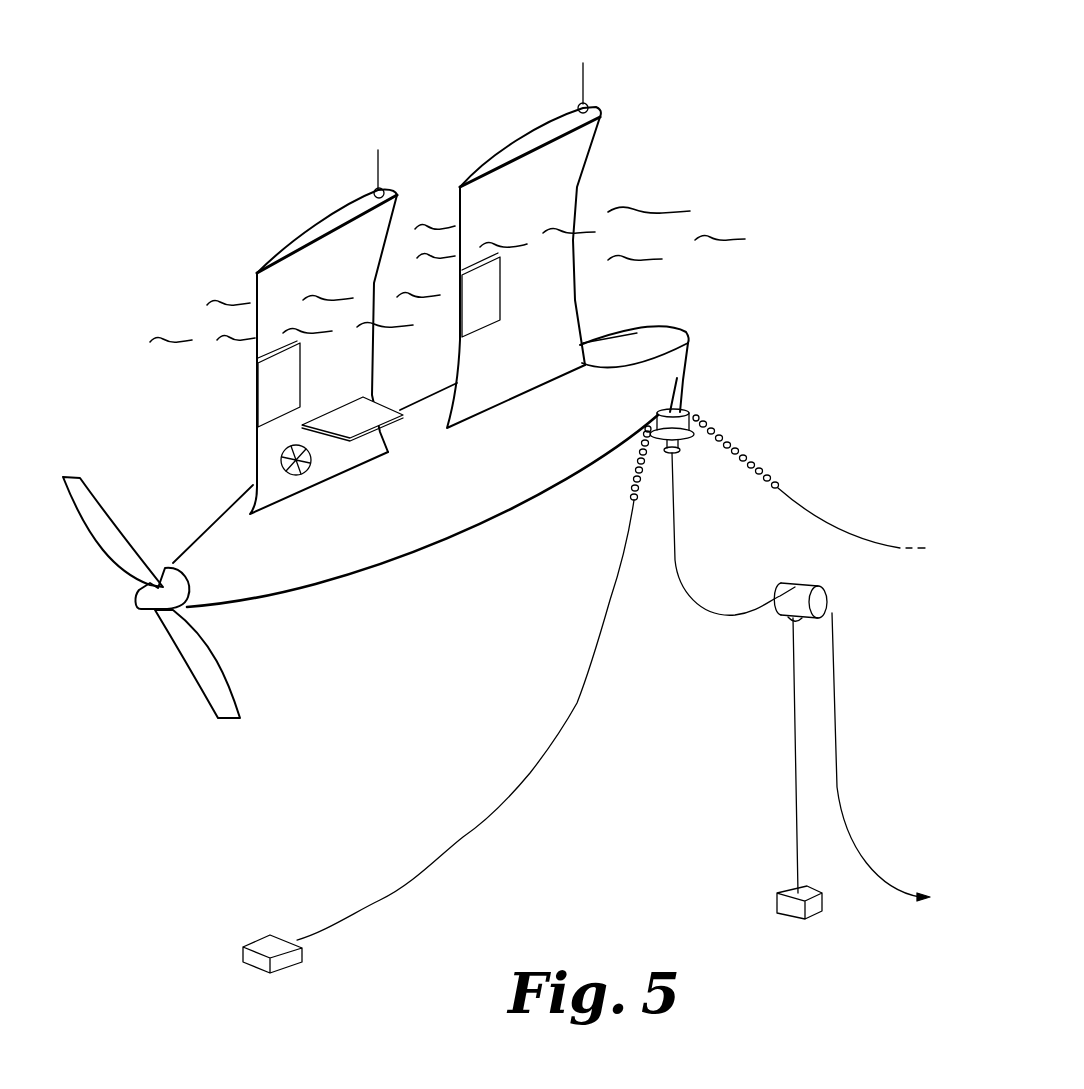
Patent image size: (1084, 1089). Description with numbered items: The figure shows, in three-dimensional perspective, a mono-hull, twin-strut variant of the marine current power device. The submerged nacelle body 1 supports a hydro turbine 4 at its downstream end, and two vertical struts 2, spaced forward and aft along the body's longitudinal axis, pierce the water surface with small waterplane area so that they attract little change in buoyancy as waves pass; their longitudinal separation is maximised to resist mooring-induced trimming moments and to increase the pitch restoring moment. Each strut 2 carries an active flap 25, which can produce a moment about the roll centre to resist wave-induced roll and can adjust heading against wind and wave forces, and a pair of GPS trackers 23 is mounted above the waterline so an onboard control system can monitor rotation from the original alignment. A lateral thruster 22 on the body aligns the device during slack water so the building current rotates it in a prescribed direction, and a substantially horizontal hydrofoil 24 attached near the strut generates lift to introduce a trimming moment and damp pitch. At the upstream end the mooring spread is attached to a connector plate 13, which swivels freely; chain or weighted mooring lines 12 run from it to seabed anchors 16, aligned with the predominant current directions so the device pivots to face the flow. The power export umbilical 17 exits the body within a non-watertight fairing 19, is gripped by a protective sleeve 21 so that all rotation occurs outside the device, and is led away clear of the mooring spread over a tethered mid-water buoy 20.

The submerged nacelle body 1 is at (410, 562).
The vertical strut 2 is at (293, 245).
The hydro turbine 4 is at (233, 697).
The mooring lines 12 is at (803, 505).
The connector plate 13 is at (683, 412).
The seabed anchor 16 is at (302, 948).
The power export umbilical 17 is at (675, 533).
The fairing 19 is at (665, 320).
The tethered mid-water buoy 20 is at (793, 688).
The protective sleeve 21 is at (678, 452).
The lateral thruster 22 is at (310, 465).
The GPS tracker 23 is at (376, 167).
The hydrofoil 24 is at (392, 425).
The active flap 25 is at (263, 397).